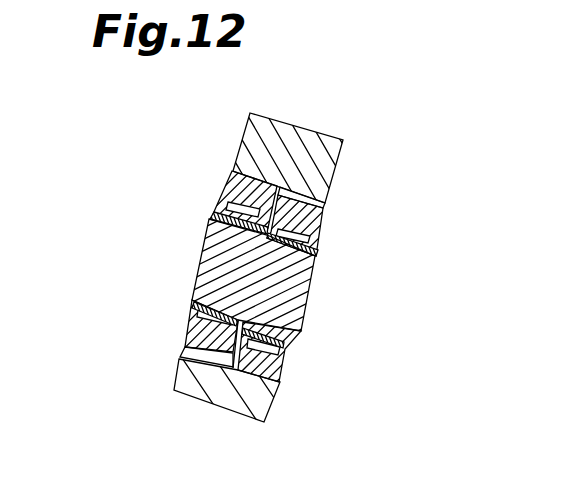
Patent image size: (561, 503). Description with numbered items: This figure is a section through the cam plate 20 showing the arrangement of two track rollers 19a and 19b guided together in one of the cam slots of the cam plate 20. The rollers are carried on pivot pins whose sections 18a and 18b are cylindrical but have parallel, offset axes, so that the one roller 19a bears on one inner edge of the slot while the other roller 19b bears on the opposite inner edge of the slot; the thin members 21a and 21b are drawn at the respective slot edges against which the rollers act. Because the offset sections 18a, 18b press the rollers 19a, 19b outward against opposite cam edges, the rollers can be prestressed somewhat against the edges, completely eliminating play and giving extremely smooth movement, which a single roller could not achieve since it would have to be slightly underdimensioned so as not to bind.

The cam plate 20 is at (285, 146).
The track roller 19b is at (232, 176).
The upper thin plate 21b is at (327, 205).
The track roller 19a is at (320, 229).
The pivot pin section 18b is at (227, 258).
The pivot pin section 18a is at (278, 293).
The lower thin plate 21a is at (203, 356).